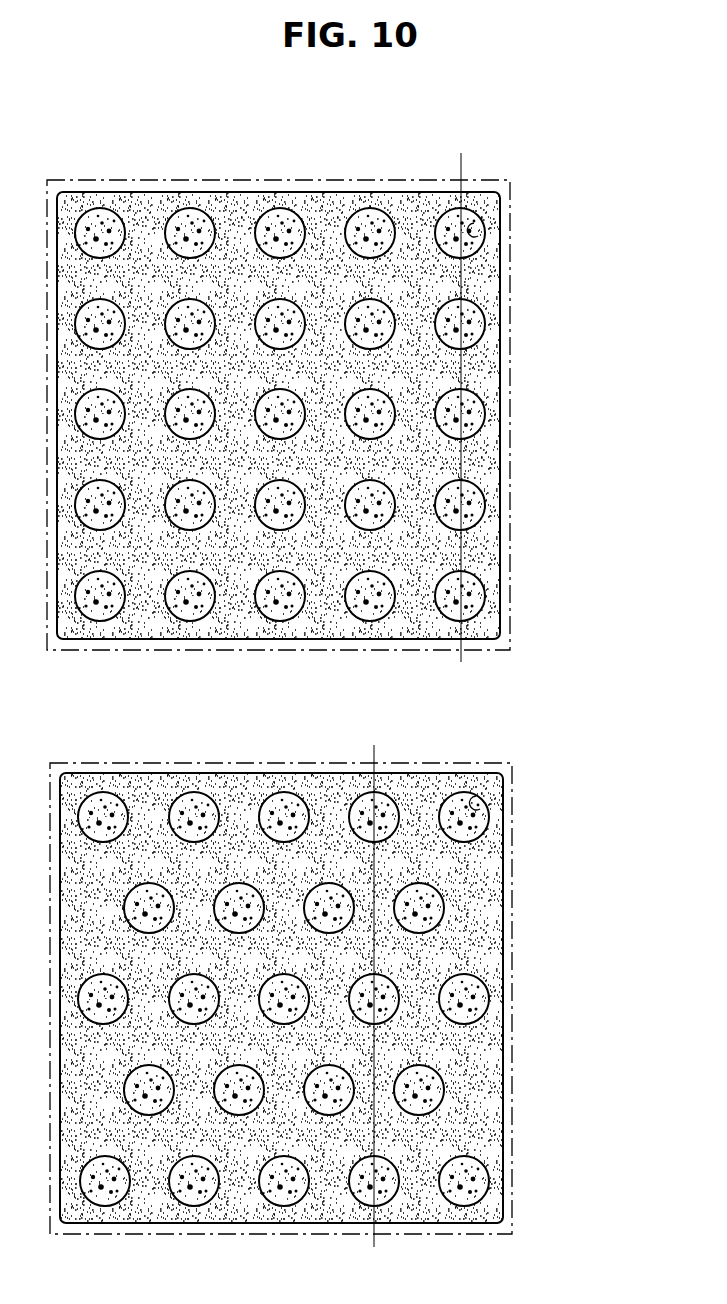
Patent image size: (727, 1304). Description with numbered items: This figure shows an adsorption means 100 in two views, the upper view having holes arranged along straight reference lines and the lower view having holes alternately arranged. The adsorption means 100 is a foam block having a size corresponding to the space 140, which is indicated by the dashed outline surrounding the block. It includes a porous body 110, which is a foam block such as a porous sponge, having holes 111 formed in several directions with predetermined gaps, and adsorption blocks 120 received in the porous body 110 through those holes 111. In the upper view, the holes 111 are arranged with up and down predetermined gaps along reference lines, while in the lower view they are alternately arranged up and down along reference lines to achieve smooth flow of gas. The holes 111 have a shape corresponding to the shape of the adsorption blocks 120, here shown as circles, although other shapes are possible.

The adsorption means 100 is at (359, 716).
The porous body 110 is at (500, 378).
The holes 111 is at (475, 226).
The adsorption blocks 120 is at (472, 244).
The space 140 is at (502, 297).